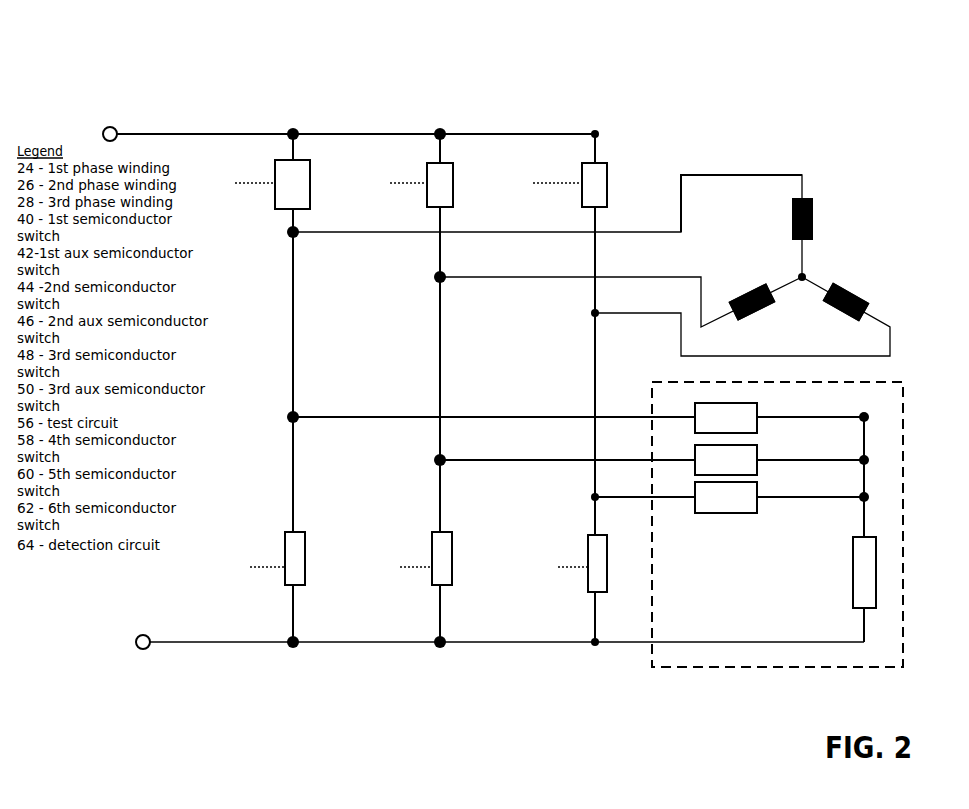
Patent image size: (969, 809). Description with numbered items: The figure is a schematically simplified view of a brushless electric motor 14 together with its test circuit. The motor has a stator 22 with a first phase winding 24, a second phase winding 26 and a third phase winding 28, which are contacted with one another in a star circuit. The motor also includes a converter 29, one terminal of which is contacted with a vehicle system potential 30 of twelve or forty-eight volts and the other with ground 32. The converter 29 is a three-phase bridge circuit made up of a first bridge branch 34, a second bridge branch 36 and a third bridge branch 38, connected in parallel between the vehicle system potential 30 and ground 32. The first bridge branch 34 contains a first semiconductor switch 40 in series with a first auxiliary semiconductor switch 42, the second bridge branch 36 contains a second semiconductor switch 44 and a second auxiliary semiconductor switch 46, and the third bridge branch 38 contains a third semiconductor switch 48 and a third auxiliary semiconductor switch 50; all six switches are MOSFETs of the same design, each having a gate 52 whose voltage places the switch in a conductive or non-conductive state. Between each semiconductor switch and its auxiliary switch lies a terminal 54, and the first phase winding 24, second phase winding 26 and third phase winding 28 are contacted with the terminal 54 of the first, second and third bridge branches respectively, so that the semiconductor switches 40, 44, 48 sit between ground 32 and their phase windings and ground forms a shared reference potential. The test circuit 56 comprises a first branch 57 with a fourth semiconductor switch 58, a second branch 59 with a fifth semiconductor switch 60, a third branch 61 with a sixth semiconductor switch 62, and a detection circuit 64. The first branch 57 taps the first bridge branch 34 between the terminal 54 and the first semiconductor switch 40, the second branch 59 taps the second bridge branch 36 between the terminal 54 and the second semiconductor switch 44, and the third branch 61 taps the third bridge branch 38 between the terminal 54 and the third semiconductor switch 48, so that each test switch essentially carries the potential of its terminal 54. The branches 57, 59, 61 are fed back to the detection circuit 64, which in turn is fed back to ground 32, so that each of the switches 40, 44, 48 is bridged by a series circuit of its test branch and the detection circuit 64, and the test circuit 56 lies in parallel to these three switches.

The brushless electric motor 14 is at (838, 130).
The stator 22 is at (878, 220).
The first phase winding 24 is at (812, 220).
The second phase winding 26 is at (752, 293).
The third phase winding 28 is at (856, 300).
The converter 29 is at (350, 108).
The vehicle system potential 30 is at (112, 127).
The ground 32 is at (143, 634).
The first bridge branch 34 is at (293, 315).
The second bridge branch 36 is at (440, 340).
The third bridge branch 38 is at (595, 355).
The first semiconductor switch 40 is at (305, 555).
The first auxiliary semiconductor switch 42 is at (310, 185).
The second semiconductor switch 44 is at (452, 555).
The second auxiliary semiconductor switch 46 is at (453, 183).
The third semiconductor switch 48 is at (588, 578).
The third auxiliary semiconductor switch 50 is at (607, 183).
The gate 52 is at (254, 184).
The terminal 54 is at (291, 234).
The test circuit 56 is at (742, 667).
The first branch 57 is at (375, 418).
The fourth semiconductor switch 58 is at (726, 418).
The second branch 59 is at (522, 462).
The fifth semiconductor switch 60 is at (726, 460).
The third branch 61 is at (662, 497).
The sixth semiconductor switch 62 is at (726, 497).
The detection circuit 64 is at (853, 570).